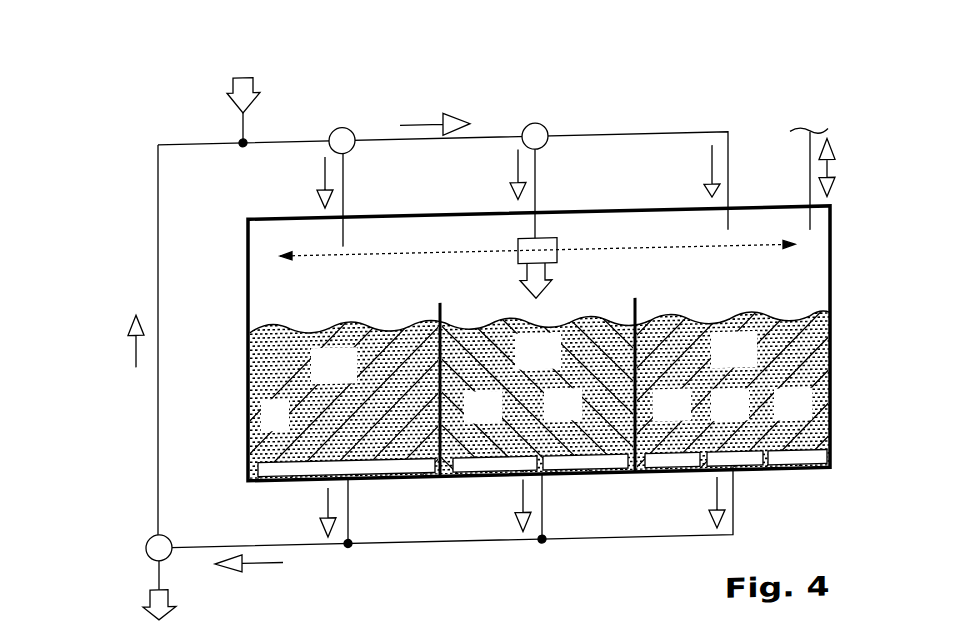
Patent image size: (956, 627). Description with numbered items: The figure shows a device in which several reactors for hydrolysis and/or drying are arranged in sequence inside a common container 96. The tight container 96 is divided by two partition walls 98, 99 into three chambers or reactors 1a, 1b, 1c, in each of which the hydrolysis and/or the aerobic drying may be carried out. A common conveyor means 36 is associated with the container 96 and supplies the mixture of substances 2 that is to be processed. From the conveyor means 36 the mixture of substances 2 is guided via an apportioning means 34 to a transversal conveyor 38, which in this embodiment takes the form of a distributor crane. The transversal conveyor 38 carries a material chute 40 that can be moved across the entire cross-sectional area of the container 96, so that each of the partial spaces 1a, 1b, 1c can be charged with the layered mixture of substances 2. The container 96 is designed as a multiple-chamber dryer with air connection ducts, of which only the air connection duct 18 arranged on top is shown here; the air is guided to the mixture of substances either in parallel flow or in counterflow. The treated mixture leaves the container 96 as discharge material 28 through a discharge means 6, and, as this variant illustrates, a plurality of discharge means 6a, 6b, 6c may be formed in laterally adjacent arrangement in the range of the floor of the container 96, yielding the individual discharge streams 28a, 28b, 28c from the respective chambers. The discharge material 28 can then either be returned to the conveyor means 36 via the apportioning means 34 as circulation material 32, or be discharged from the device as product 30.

The mixture of substances 2 is at (228, 84).
The common conveyor means 36 is at (287, 137).
The apportioning means 34 is at (351, 128).
The transversal conveyor 38 is at (557, 250).
The material chute 40 is at (553, 279).
The air connection duct 18 is at (808, 209).
The container 96 is at (248, 227).
The partition wall 98 is at (440, 308).
The partition wall 99 is at (636, 313).
The first chamber 1a is at (318, 369).
The second chamber 1b is at (522, 364).
The third chamber 1c is at (718, 368).
The discharge means 6 is at (312, 463).
The discharge means 6a is at (485, 463).
The discharge means 6b is at (570, 466).
The discharge means 6c is at (796, 465).
The circulation material 32 is at (137, 342).
The product 30 is at (157, 594).
The discharge material 28 is at (260, 560).
The discharge material 28a is at (327, 494).
The discharge material 28b is at (523, 492).
The discharge material 28c is at (715, 495).